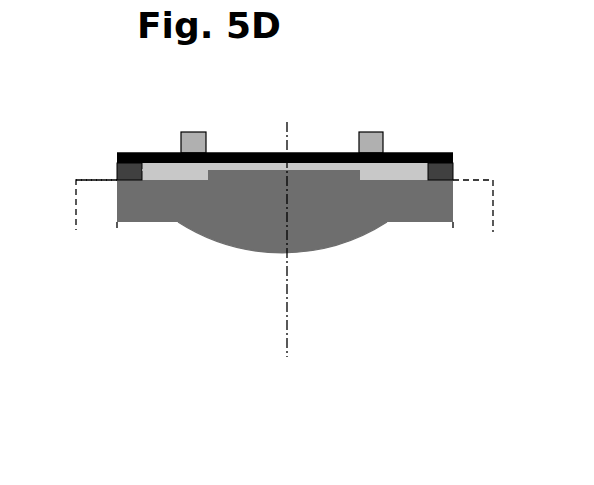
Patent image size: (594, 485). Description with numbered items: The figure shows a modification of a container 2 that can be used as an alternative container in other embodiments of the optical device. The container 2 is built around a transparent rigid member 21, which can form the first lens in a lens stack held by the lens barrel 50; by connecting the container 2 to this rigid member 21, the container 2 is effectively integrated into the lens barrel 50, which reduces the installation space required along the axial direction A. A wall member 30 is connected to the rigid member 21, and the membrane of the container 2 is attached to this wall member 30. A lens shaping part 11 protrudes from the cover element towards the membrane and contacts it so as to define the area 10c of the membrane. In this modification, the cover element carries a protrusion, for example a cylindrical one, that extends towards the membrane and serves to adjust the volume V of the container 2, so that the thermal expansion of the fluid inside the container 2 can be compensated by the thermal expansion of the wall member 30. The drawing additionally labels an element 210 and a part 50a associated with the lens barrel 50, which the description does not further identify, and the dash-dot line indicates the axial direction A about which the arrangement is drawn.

The container 2 is at (360, 247).
The transparent rigid member 21 is at (318, 238).
The adhesive/spacer layer 210 is at (235, 165).
The wall member 30 is at (453, 162).
The lens shaping part 11 is at (383, 146).
The area 10c is at (273, 153).
The lens barrel 50 is at (477, 198).
The substrate footprint outline 50a is at (93, 178).
The volume V is at (152, 168).
The axial direction A is at (272, 239).